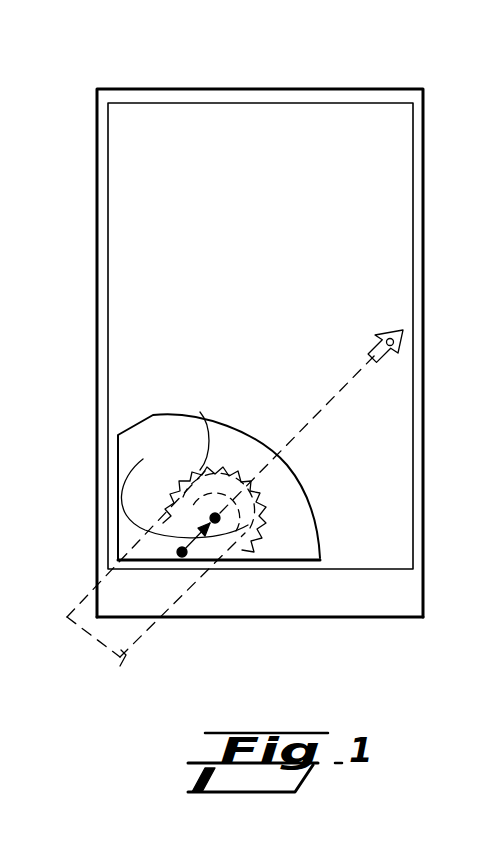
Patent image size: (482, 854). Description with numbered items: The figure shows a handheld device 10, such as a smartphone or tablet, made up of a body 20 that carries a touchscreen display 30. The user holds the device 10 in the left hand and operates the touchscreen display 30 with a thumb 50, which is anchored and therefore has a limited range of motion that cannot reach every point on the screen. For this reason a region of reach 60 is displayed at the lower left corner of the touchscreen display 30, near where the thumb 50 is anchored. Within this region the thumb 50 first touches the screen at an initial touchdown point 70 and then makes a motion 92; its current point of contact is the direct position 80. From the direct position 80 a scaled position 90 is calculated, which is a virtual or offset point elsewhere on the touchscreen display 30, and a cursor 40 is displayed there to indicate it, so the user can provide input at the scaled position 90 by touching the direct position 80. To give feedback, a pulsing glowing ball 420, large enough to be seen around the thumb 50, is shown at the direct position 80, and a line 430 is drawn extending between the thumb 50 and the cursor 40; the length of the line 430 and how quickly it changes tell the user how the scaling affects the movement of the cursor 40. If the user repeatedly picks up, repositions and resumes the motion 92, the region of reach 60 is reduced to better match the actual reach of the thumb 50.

The device 10 is at (449, 225).
The body 20 is at (347, 597).
The touchscreen display 30 is at (160, 149).
The cursor 40 is at (388, 282).
The thumb 50 is at (137, 648).
The region of reach 60 is at (288, 466).
The initial touchdown point 70 is at (181, 557).
The direct position 80 is at (222, 528).
The scaled position 90 is at (384, 334).
The motion 92 is at (184, 485).
The pulsing glowing ball 420 is at (200, 412).
The line 430 is at (337, 392).